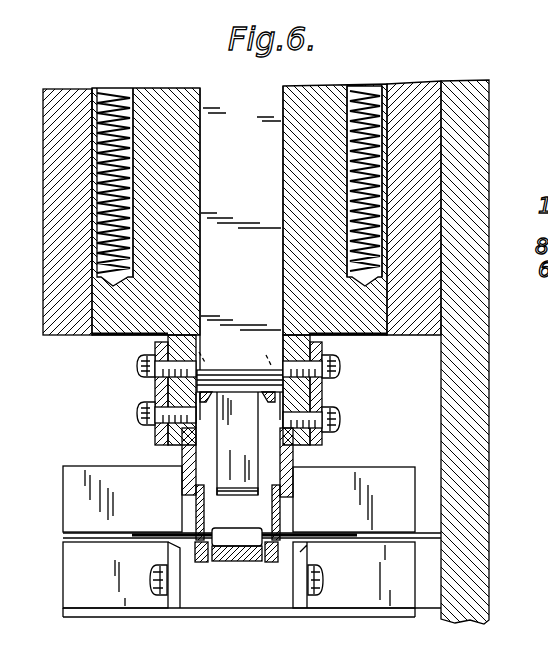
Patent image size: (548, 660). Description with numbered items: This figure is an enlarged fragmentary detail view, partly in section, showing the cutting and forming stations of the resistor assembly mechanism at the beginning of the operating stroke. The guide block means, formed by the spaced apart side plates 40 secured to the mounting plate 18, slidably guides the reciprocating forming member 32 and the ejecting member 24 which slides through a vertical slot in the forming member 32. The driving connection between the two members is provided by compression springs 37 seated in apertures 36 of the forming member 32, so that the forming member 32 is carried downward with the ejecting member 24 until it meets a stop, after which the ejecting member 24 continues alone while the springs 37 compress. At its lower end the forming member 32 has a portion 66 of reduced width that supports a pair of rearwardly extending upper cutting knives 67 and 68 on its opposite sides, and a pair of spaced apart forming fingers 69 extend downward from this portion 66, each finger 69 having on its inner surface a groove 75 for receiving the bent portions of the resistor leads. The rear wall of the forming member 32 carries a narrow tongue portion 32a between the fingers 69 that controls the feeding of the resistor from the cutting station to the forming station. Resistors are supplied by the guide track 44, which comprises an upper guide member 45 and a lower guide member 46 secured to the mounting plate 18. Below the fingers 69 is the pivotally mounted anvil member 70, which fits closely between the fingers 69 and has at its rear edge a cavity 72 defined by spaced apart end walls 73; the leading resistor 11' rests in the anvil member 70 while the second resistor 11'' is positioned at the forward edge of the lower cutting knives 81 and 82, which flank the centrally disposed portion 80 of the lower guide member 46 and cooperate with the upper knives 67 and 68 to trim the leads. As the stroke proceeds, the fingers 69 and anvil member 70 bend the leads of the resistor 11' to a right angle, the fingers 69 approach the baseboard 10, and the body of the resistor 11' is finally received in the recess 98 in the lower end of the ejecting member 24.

The baseboard 10 is at (253, 82).
The mounting plate 18 is at (478, 308).
The ejecting member 24 is at (254, 131).
The forming member 32 is at (333, 88).
The tongue portion 32a is at (239, 411).
The apertures 36 is at (126, 100).
The compression springs 37 is at (134, 106).
The side plates 40 is at (63, 100).
The guide track 44 is at (70, 535).
The upper guide member 45 is at (70, 499).
The lower guide member 46 is at (70, 586).
The portion of reduced width 66 is at (322, 387).
The upper cutting knife 67 is at (162, 389).
The upper cutting knife 68 is at (322, 403).
The forming fingers 69 is at (293, 481).
The anvil member 70 is at (203, 562).
The cavity 72 is at (268, 536).
The end walls 73 is at (279, 514).
The groove 75 is at (292, 456).
The centrally disposed portion 80 is at (270, 599).
The lower cutting knife 81 is at (173, 594).
The lower cutting knife 82 is at (303, 600).
The recess 98 is at (259, 394).
The leading resistor 11' is at (237, 523).
The second resistor 11'' is at (248, 559).